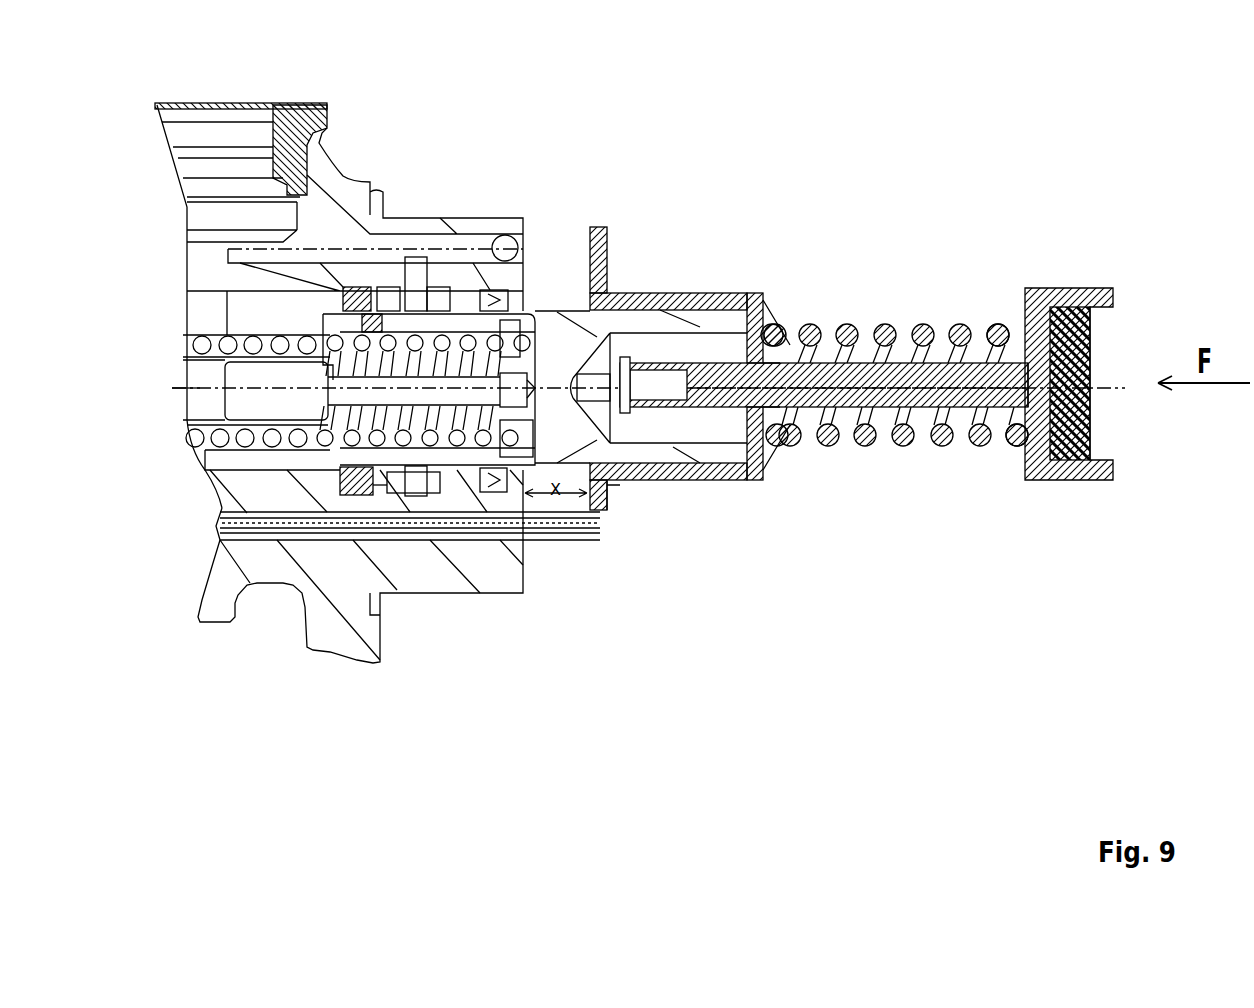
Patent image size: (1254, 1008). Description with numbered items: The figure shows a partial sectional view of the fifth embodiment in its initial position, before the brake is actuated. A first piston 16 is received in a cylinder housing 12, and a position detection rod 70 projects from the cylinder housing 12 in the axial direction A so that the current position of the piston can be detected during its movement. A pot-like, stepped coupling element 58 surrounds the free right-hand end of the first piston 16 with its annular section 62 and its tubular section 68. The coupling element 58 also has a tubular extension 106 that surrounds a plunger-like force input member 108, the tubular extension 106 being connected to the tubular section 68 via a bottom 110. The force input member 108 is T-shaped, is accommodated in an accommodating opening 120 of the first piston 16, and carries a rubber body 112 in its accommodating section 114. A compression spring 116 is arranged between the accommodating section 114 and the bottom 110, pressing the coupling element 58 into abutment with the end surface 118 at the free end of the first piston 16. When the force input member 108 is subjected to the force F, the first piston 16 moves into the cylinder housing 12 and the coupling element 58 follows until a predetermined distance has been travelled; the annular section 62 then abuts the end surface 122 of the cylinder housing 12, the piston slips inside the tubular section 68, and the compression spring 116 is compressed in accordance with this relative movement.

The cylinder housing 12 is at (473, 217).
The first piston 16 is at (537, 313).
The annular section 62 is at (594, 225).
The tubular section 68 is at (645, 293).
The end surface 118 is at (735, 293).
The tubular extension 106 is at (777, 324).
The compression spring 116 is at (998, 323).
The accommodating section 114 is at (1050, 288).
The rubber body 112 is at (1090, 342).
The position detection rod 70 is at (478, 530).
The end surface 122 is at (513, 540).
The accommodating opening 120 is at (643, 427).
The coupling element 58 is at (683, 480).
The bottom 110 is at (770, 477).
The force input member 108 is at (884, 408).
The axial direction A is at (180, 396).